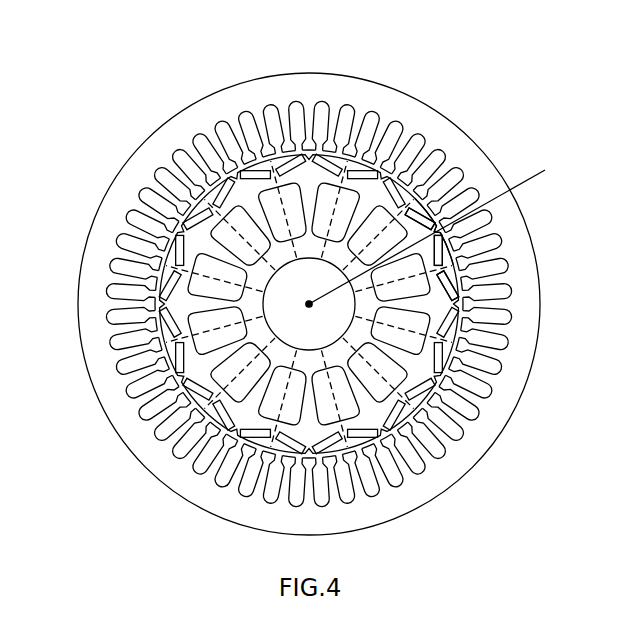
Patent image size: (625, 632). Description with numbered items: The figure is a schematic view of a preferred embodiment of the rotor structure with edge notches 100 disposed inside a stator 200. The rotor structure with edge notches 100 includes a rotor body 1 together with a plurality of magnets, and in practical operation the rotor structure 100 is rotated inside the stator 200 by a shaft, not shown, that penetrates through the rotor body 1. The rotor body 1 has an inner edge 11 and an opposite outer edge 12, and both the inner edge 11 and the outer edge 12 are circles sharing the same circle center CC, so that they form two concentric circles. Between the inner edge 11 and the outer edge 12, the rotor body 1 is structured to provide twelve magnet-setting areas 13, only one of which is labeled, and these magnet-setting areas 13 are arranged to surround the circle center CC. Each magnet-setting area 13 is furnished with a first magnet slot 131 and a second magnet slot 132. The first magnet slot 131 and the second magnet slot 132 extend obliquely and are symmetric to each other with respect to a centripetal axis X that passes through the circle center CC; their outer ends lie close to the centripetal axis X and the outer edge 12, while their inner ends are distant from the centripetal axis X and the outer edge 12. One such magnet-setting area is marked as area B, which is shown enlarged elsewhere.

The rotor body 1 is at (447, 406).
The stator 200 is at (310, 72).
The rotor structure with edge notches 100 is at (170, 383).
The inner edge 11 is at (263, 276).
The outer edge 12 is at (460, 317).
The magnet-setting area 13 is at (446, 296).
The first magnet slot 131 is at (428, 206).
The second magnet slot 132 is at (443, 252).
The area B is at (446, 222).
The centripetal axis X is at (433, 231).
The circle center CC is at (306, 305).